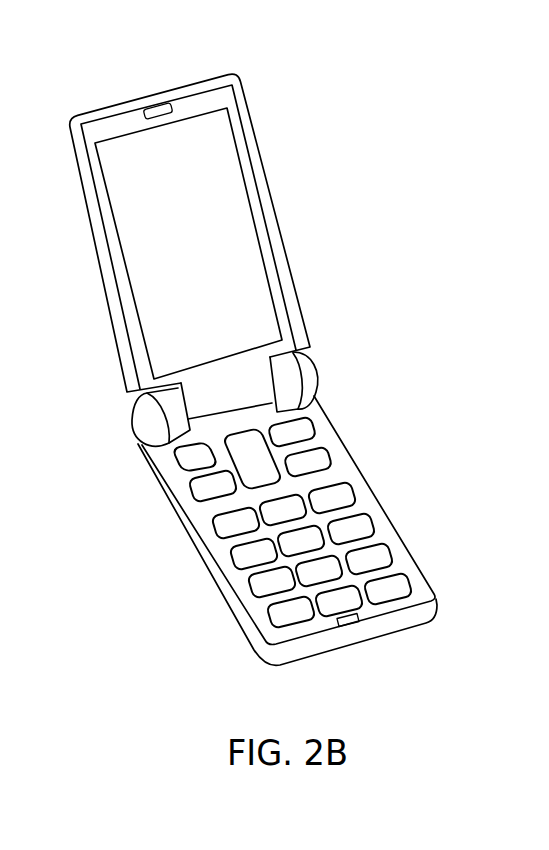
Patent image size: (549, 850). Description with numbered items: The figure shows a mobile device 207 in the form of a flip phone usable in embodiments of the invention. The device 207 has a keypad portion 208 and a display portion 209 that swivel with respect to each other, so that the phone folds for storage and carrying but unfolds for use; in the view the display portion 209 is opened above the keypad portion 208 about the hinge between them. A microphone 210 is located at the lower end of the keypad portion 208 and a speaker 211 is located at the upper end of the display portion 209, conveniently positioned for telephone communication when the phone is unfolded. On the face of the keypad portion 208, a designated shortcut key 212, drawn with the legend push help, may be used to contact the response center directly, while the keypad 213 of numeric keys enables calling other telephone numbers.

The mobile device 207 is at (334, 168).
The keypad portion 208 is at (332, 447).
The display portion 209 is at (293, 287).
The microphone 210 is at (352, 623).
The speaker 211 is at (158, 109).
The designated shortcut key 212 is at (173, 455).
The keypad 213 is at (204, 538).